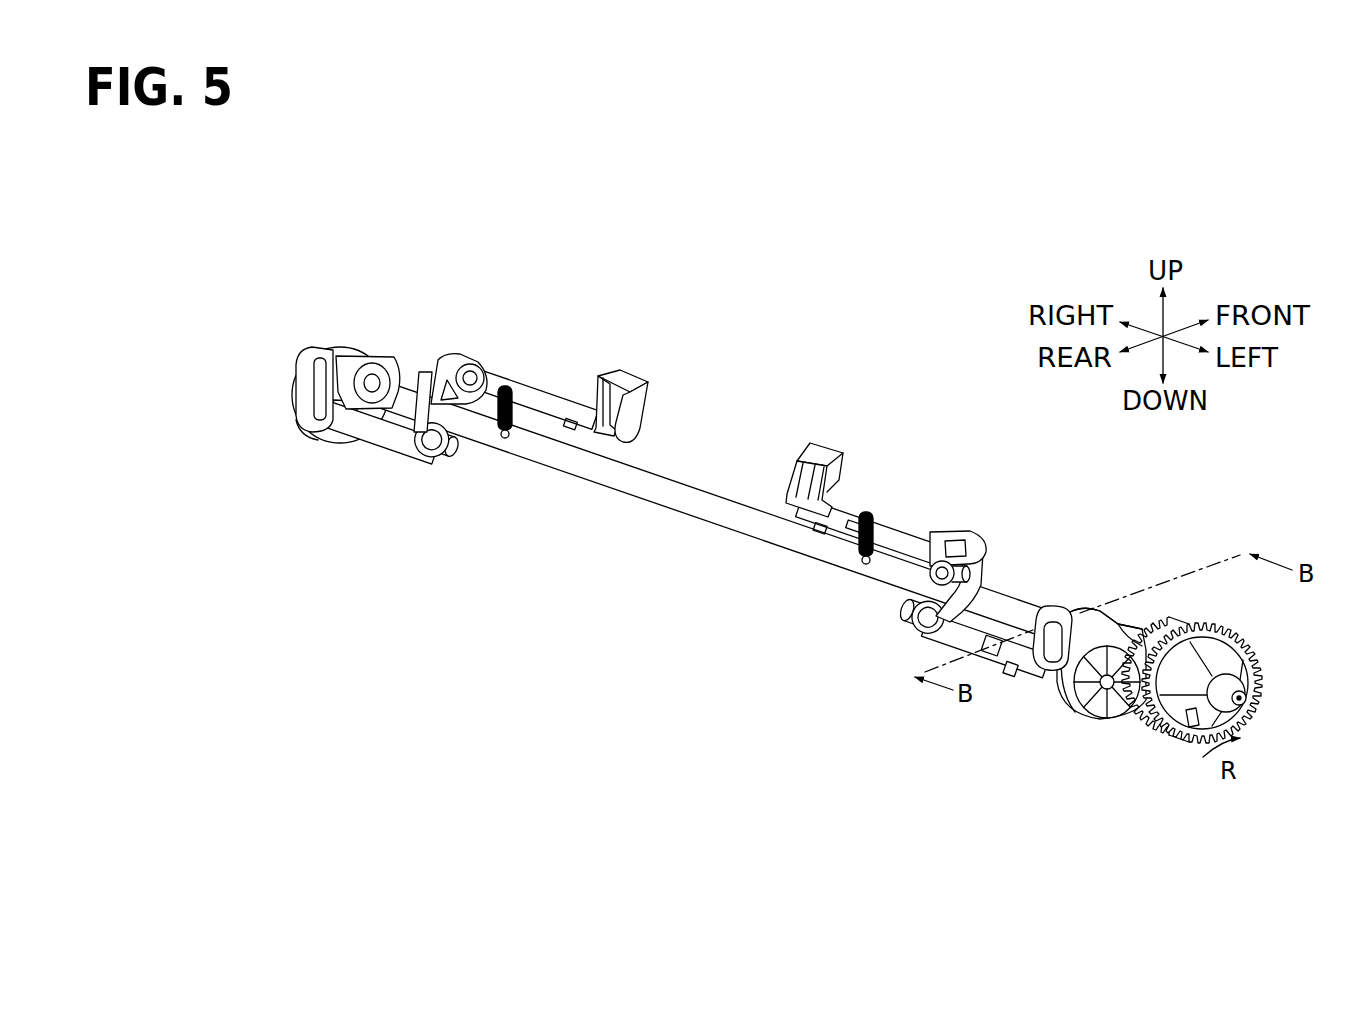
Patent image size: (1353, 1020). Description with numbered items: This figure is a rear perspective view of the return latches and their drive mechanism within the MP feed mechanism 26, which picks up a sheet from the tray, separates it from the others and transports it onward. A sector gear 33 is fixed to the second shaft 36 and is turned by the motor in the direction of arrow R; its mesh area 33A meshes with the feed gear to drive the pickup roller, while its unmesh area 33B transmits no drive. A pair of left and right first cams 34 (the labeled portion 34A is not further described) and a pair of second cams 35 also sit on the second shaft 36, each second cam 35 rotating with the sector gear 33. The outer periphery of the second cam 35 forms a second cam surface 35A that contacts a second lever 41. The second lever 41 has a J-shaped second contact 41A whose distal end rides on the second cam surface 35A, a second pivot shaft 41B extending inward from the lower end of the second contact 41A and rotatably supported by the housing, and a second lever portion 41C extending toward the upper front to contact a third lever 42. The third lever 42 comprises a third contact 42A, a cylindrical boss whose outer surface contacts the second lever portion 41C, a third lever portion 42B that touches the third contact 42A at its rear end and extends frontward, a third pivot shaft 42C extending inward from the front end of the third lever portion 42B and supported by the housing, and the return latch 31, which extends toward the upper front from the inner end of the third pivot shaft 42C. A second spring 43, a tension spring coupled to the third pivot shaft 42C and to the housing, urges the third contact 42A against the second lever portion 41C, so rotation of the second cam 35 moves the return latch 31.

The MP feed mechanism 26 is at (246, 283).
The return latch 31 is at (625, 378).
The sector gear 33 is at (1176, 749).
The mesh area 33A is at (1152, 724).
The unmesh area 33B is at (1168, 641).
The first cam 34 is at (336, 454).
The cam surface 34A is at (305, 426).
The second cam 35 is at (356, 345).
The second cam surface 35A is at (1066, 688).
The second shaft 36 is at (689, 509).
The second lever 41 is at (297, 369).
The second contact 41A is at (318, 346).
The second pivot shaft 41B is at (393, 436).
The second lever portion 41C is at (444, 352).
The third lever 42 is at (536, 368).
The third contact 42A is at (418, 365).
The third lever portion 42B is at (467, 362).
The third pivot shaft 42C is at (551, 401).
The second spring 43 is at (513, 417).